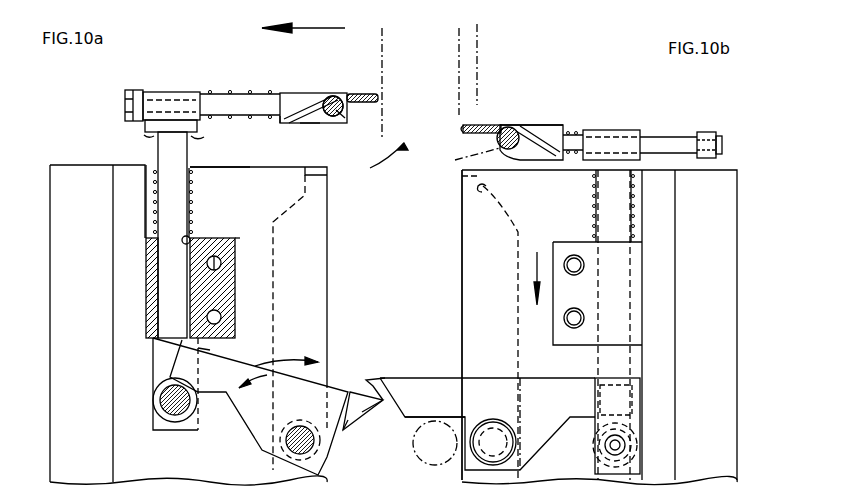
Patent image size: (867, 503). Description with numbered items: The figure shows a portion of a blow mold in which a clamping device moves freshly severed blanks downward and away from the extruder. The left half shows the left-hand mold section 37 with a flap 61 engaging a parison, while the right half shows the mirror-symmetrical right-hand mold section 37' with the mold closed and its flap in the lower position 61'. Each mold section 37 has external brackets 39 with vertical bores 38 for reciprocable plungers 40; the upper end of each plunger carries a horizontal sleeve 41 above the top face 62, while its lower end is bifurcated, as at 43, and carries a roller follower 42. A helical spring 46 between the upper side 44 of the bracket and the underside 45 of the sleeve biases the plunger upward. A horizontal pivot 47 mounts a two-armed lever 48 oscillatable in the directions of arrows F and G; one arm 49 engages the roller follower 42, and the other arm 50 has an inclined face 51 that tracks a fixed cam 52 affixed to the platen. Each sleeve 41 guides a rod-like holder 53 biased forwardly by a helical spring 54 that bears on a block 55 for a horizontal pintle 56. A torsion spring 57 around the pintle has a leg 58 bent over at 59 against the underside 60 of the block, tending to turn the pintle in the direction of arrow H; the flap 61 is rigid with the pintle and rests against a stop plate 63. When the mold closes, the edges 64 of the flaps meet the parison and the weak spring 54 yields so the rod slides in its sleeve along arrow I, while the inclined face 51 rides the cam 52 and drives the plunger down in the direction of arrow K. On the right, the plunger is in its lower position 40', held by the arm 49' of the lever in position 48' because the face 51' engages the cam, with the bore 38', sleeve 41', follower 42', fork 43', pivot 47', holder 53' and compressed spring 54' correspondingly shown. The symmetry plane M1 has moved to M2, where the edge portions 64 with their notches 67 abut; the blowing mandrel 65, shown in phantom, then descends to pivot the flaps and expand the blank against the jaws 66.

In FIG. 10a, the mold section 37 is at (273, 318).
In FIG. 10a, the vertical bore 38 is at (208, 269).
In FIG. 10a, the external bracket 39 is at (236, 240).
In FIG. 10a, the plunger 40 is at (190, 235).
In FIG. 10a, the horizontal sleeve 41 is at (162, 91).
In FIG. 10a, the roller follower 42 is at (178, 402).
In FIG. 10a, the bifurcated portion 43 is at (214, 406).
In FIG. 10a, the upper side of bracket 44 is at (224, 246).
In FIG. 10a, the underside of sleeve 45 is at (204, 186).
In FIG. 10a, the helical spring 46 is at (152, 138).
In FIG. 10a, the horizontal pivot 47 is at (273, 443).
In FIG. 10a, the two-armed lever 48 is at (360, 383).
In FIG. 10a, the lever arm 49 is at (145, 340).
In FIG. 10a, the lever arm 50 is at (345, 428).
In FIG. 10a, the inclined face 51 is at (379, 443).
In FIG. 10a, the fixed cam 52 is at (428, 450).
In FIG. 10a, the rod-like holder 53 is at (240, 82).
In FIG. 10a, the helical spring 54 is at (239, 84).
In FIG. 10a, the block 55 is at (290, 98).
In FIG. 10a, the pintle 56 is at (333, 116).
In FIG. 10a, the torsion spring 57 is at (345, 116).
In FIG. 10a, the spring leg 58 is at (313, 108).
In FIG. 10a, the bent-over portion 59 is at (283, 122).
In FIG. 10a, the underside of block 60 is at (312, 124).
In FIG. 10a, the flap 61 is at (365, 76).
In FIG. 10a, the top face 62 is at (235, 166).
In FIG. 10a, the stop plate 63 is at (332, 96).
In FIG. 10b, the flap edge portion 64 is at (462, 130).
In FIG. 10b, the blowing mandrel 65 is at (477, 28).
In FIG. 10b, the jaw 66 is at (486, 192).
In FIG. 10b, the notch 67 is at (468, 125).
In FIG. 10b, the mold section 37' is at (445, 325).
In FIG. 10b, the vertical bore 38' is at (597, 293).
In FIG. 10b, the plunger lower end position 40' is at (652, 325).
In FIG. 10b, the horizontal sleeve 41' is at (611, 105).
In FIG. 10b, the roller follower 42' is at (635, 426).
In FIG. 10b, the bifurcated portion 43' is at (487, 424).
In FIG. 10b, the horizontal pivot 47' is at (493, 401).
In FIG. 10b, the lever position 48' is at (435, 377).
In FIG. 10b, the lever arm 49' is at (636, 393).
In FIG. 10b, the inclined face 51' is at (384, 368).
In FIG. 10b, the rod-like holder 53' is at (681, 124).
In FIG. 10b, the helical spring 54' is at (581, 122).
In FIG. 10b, the flap position 61' is at (524, 122).
In FIG. 10a, the arrow I is at (308, 29).
In FIG. 10a, the arrow H is at (389, 164).
In FIG. 10a, the arrow G is at (286, 351).
In FIG. 10a, the arrow F is at (253, 385).
In FIG. 10b, the arrow K is at (535, 268).
In FIG. 10a, the central vertical symmetry plane M1 is at (398, 84).
In FIG. 10b, the symmetry plane position M2 is at (457, 62).